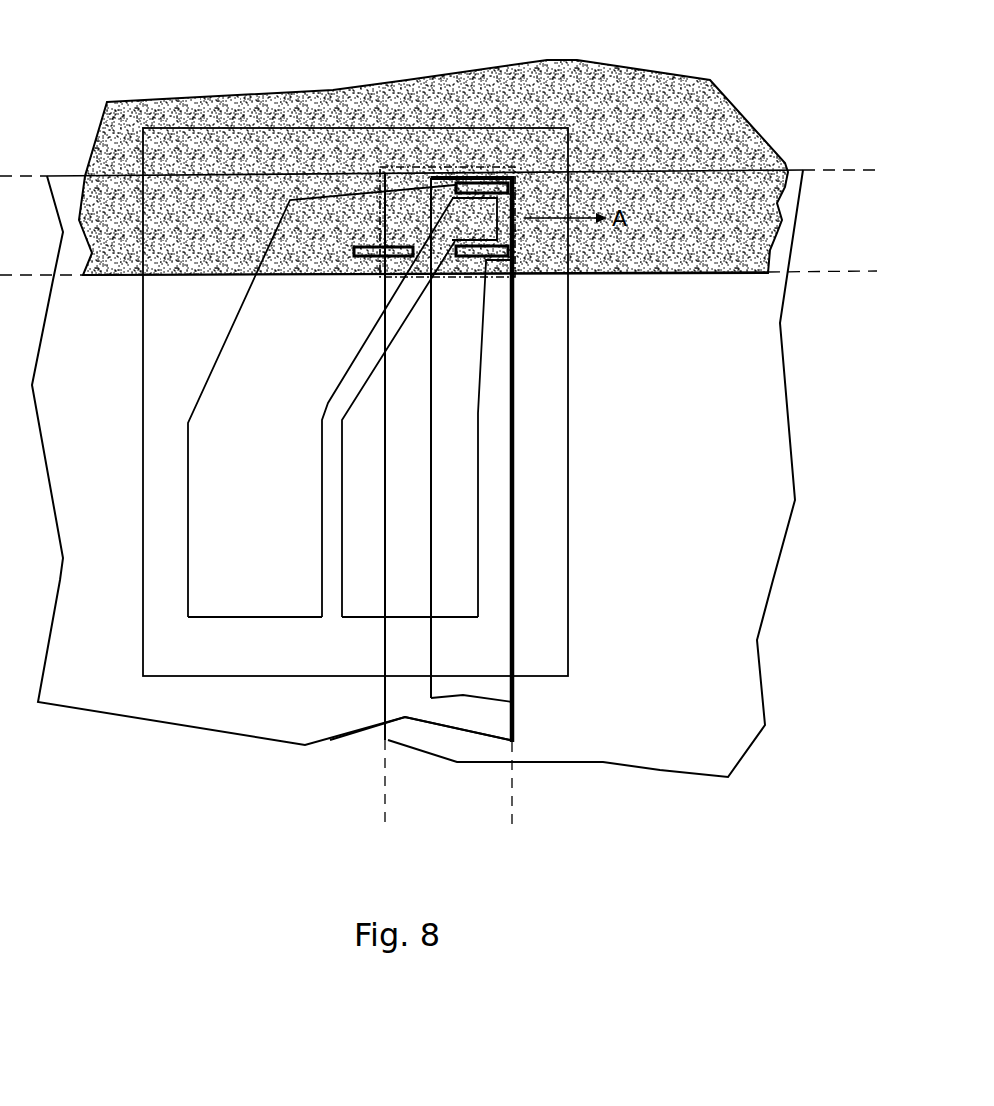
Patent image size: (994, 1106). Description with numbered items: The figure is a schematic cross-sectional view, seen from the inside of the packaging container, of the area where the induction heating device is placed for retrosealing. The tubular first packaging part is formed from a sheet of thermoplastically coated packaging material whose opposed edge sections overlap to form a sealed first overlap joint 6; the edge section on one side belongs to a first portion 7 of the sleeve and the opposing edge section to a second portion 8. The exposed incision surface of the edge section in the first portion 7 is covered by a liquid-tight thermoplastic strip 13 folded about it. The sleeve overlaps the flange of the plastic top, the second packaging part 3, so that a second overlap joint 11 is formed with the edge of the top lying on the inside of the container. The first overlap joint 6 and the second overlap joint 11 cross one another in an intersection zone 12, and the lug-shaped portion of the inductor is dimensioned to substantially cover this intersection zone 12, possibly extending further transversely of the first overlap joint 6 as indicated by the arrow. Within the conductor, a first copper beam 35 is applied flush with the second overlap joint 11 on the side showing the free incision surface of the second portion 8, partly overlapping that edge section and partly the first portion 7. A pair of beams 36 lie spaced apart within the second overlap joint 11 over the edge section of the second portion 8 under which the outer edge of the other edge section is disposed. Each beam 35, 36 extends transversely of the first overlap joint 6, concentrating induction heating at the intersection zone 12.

The second packaging part 3 is at (660, 70).
The second overlap joint 11 is at (763, 217).
The second portion 8 is at (718, 593).
The first portion 7 is at (210, 703).
The intersection zone 12 is at (398, 163).
The first beam 35 is at (365, 245).
The pair of beams 36 is at (487, 188).
The first overlap joint 6 is at (458, 710).
The strip 13 is at (497, 685).